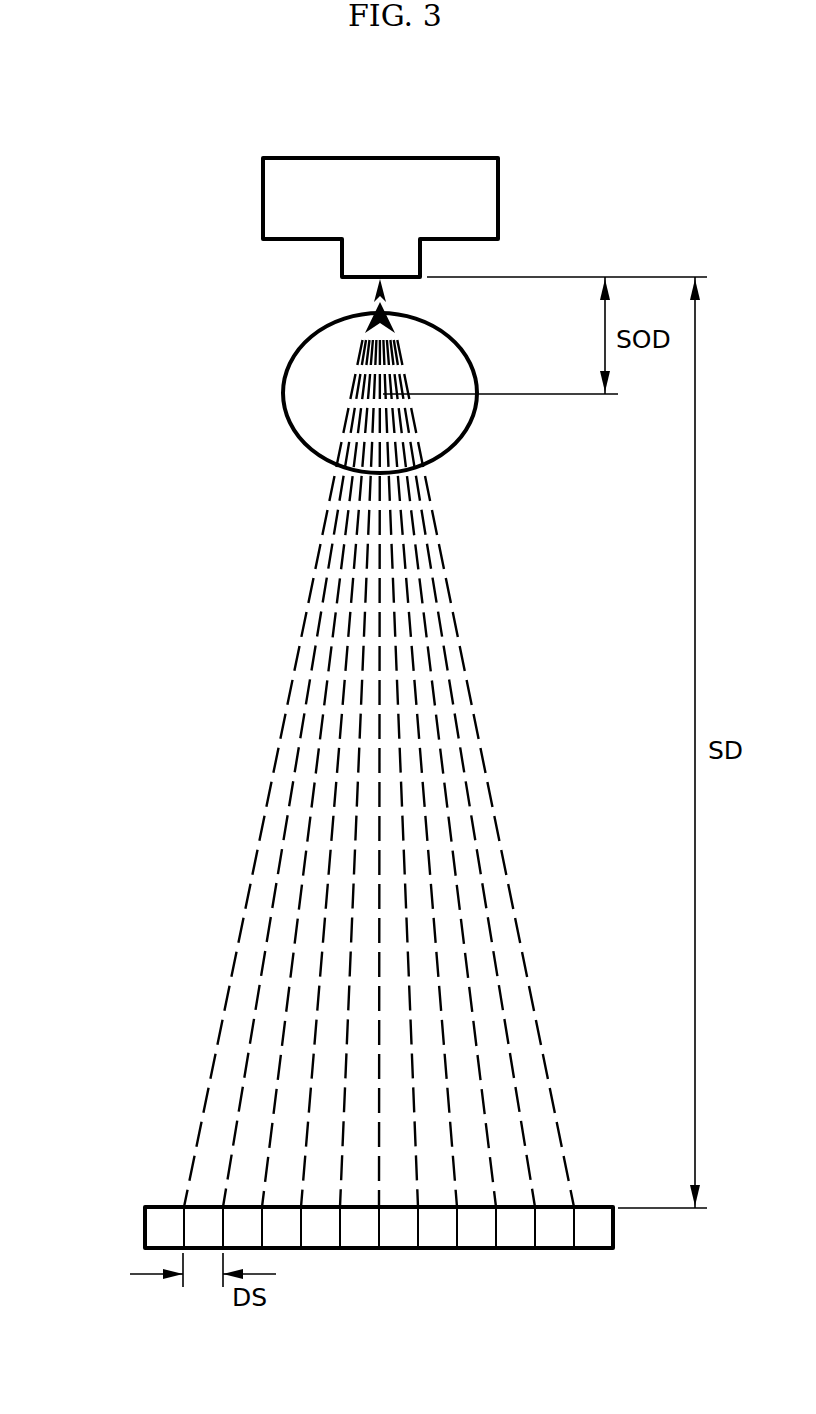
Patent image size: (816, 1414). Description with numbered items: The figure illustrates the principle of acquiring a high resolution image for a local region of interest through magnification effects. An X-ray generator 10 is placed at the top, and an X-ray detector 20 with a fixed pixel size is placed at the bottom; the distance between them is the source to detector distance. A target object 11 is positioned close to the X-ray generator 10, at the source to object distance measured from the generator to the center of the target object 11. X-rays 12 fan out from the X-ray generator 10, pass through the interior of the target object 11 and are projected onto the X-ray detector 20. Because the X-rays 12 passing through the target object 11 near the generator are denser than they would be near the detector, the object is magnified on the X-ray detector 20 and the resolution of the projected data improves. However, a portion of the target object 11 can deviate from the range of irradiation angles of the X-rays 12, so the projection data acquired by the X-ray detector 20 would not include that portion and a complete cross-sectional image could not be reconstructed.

The X-ray generator 10 is at (263, 197).
The target object 11 is at (283, 394).
The X-rays 12 is at (282, 740).
The X-ray detector 20 is at (145, 1228).